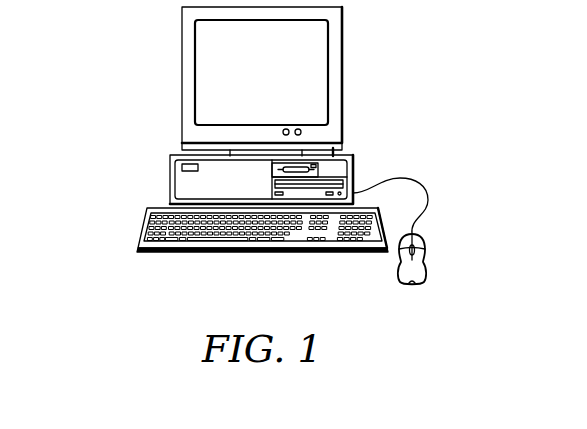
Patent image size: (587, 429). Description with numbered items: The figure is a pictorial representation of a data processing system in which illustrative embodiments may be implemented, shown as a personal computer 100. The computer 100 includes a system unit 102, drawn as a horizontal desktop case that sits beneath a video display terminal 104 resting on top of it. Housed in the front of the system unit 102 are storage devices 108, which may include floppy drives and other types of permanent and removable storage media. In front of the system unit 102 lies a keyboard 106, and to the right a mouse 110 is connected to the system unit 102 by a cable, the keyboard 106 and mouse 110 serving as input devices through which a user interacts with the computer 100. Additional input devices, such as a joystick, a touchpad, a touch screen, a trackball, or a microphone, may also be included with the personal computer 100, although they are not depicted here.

The computer 100 is at (108, 58).
The system unit 102 is at (170, 178).
The video display terminal 104 is at (342, 75).
The keyboard 106 is at (262, 253).
The storage devices 108 is at (320, 170).
The mouse 110 is at (427, 262).